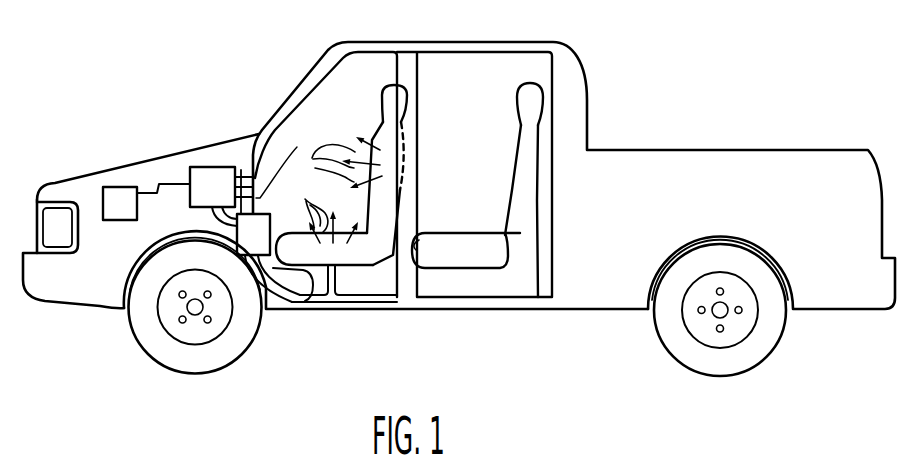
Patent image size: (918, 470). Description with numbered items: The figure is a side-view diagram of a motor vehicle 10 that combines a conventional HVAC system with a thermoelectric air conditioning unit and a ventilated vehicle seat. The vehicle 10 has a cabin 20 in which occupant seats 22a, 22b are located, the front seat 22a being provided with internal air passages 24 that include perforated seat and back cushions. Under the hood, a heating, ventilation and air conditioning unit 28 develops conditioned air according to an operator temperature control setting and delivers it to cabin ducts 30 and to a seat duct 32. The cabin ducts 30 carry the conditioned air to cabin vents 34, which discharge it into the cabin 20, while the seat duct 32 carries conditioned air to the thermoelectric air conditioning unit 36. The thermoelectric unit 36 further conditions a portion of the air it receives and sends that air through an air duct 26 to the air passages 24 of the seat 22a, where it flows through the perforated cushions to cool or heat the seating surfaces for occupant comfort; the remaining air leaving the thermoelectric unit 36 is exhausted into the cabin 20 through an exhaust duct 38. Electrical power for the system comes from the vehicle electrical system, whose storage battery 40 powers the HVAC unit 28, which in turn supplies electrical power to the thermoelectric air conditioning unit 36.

The motor vehicle 10 is at (211, 36).
The cabin 20 is at (353, 72).
The occupant seat 22a is at (374, 267).
The occupant seat 22b is at (487, 258).
The internal air passages 24 is at (310, 214).
The air duct 26 is at (276, 310).
The HVAC unit 28 is at (190, 175).
The cabin ducts 30 is at (248, 172).
The seat duct 32 is at (230, 218).
The cabin vents 34 is at (260, 177).
The thermoelectric air conditioning unit 36 is at (237, 240).
The exhaust duct 38 is at (307, 307).
The storage battery 40 is at (122, 187).